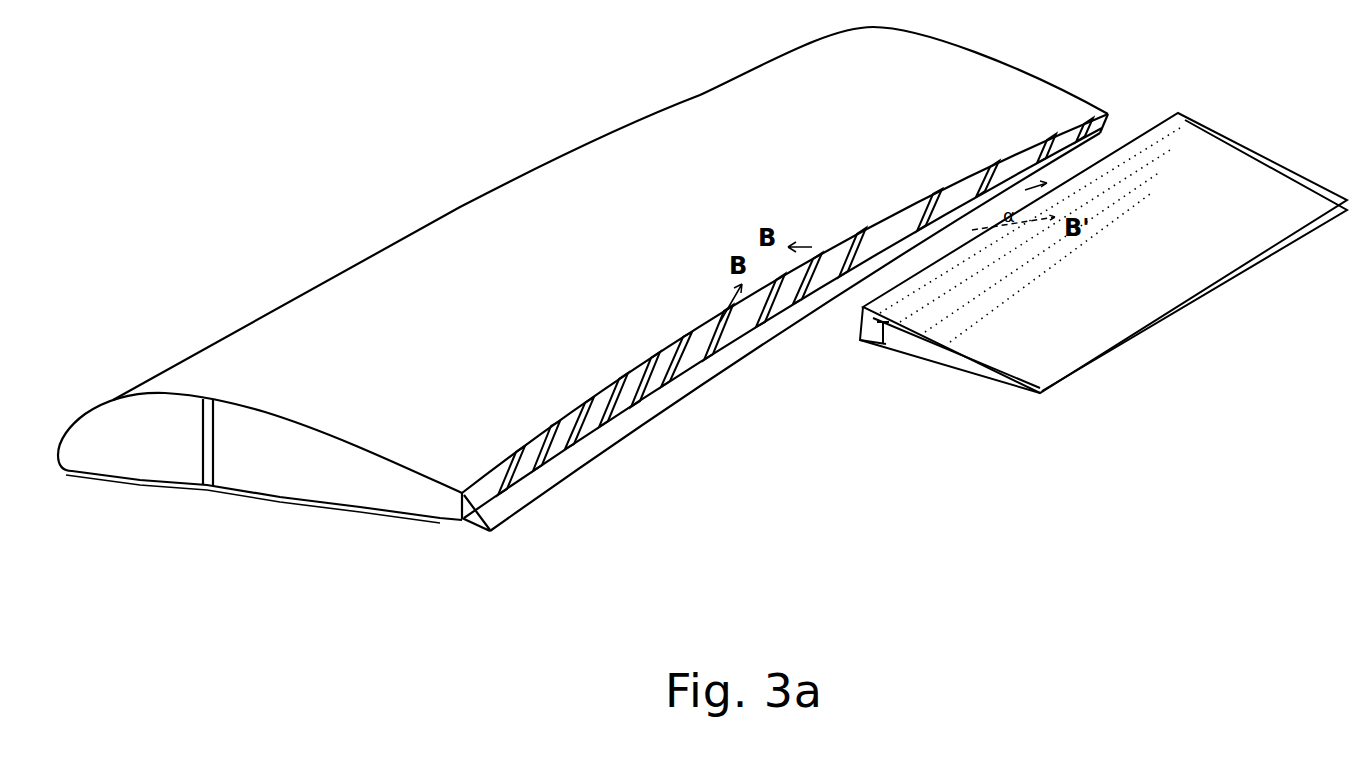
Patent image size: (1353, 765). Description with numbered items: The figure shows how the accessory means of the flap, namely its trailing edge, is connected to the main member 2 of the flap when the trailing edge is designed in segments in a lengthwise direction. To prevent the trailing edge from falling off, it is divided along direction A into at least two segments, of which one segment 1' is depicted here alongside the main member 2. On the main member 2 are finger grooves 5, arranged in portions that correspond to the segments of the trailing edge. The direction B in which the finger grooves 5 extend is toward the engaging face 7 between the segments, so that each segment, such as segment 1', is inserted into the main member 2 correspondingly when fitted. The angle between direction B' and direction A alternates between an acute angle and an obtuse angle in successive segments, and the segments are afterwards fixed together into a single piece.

The main member 2 is at (402, 408).
The finger grooves 5 is at (714, 350).
The engaging face 7 is at (995, 375).
The segment of the trailing edge 1' is at (1105, 283).